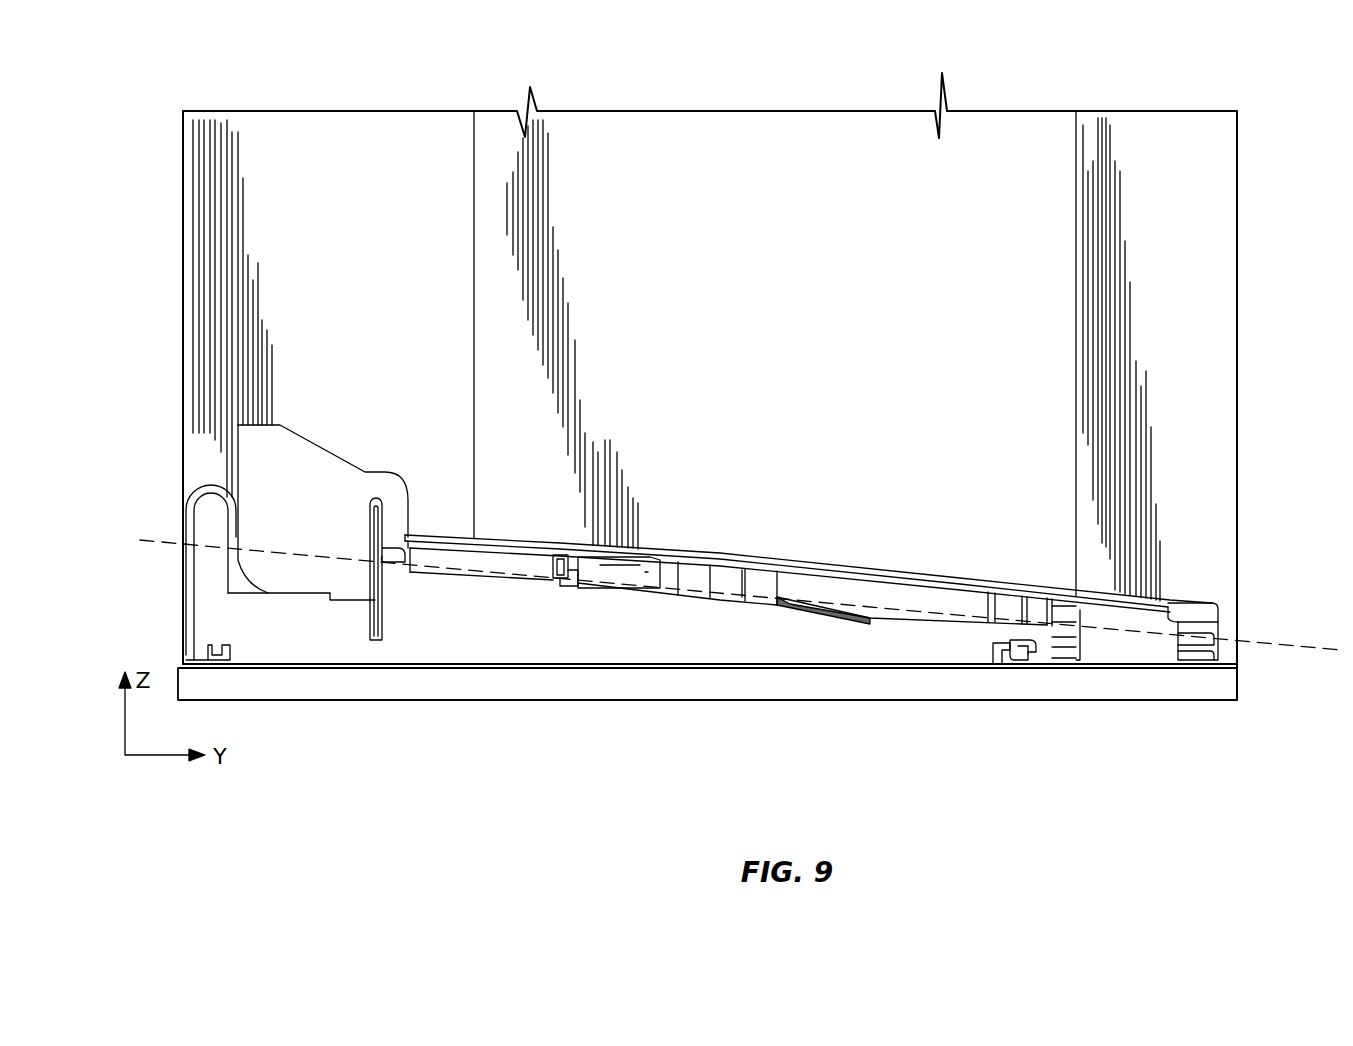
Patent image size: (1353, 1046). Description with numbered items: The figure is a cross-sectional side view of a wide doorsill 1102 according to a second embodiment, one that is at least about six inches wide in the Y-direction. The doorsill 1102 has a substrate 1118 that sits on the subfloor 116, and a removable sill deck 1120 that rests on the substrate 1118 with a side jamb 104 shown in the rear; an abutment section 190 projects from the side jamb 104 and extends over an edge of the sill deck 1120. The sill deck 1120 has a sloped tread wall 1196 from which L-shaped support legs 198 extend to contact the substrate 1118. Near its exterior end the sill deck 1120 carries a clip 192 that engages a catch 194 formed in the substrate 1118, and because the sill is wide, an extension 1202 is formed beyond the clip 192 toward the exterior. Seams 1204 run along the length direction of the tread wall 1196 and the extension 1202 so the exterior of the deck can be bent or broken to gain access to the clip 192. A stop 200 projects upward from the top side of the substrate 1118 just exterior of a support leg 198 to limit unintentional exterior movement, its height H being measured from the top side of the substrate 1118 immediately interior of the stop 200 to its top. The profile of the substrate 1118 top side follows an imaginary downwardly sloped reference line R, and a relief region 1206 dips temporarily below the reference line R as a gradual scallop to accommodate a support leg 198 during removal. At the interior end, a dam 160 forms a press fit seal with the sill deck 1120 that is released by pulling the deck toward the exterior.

The side jamb 104 is at (232, 212).
The abutment section 190 is at (957, 383).
The seam 1204 is at (1170, 605).
The relief region 1206 is at (872, 614).
The stop 200 is at (790, 597).
The height of stop H is at (742, 598).
The sloped reference line R is at (740, 599).
The dam 160 is at (372, 622).
The sill deck 1120 is at (520, 548).
The support leg 198 is at (578, 574).
The tread wall 1196 is at (620, 562).
The substrate 1118 is at (877, 650).
The subfloor 116 is at (837, 690).
The doorsill 1102 is at (778, 705).
The catch 194 is at (1002, 658).
The clip 192 is at (1027, 654).
The extension 1202 is at (1130, 610).